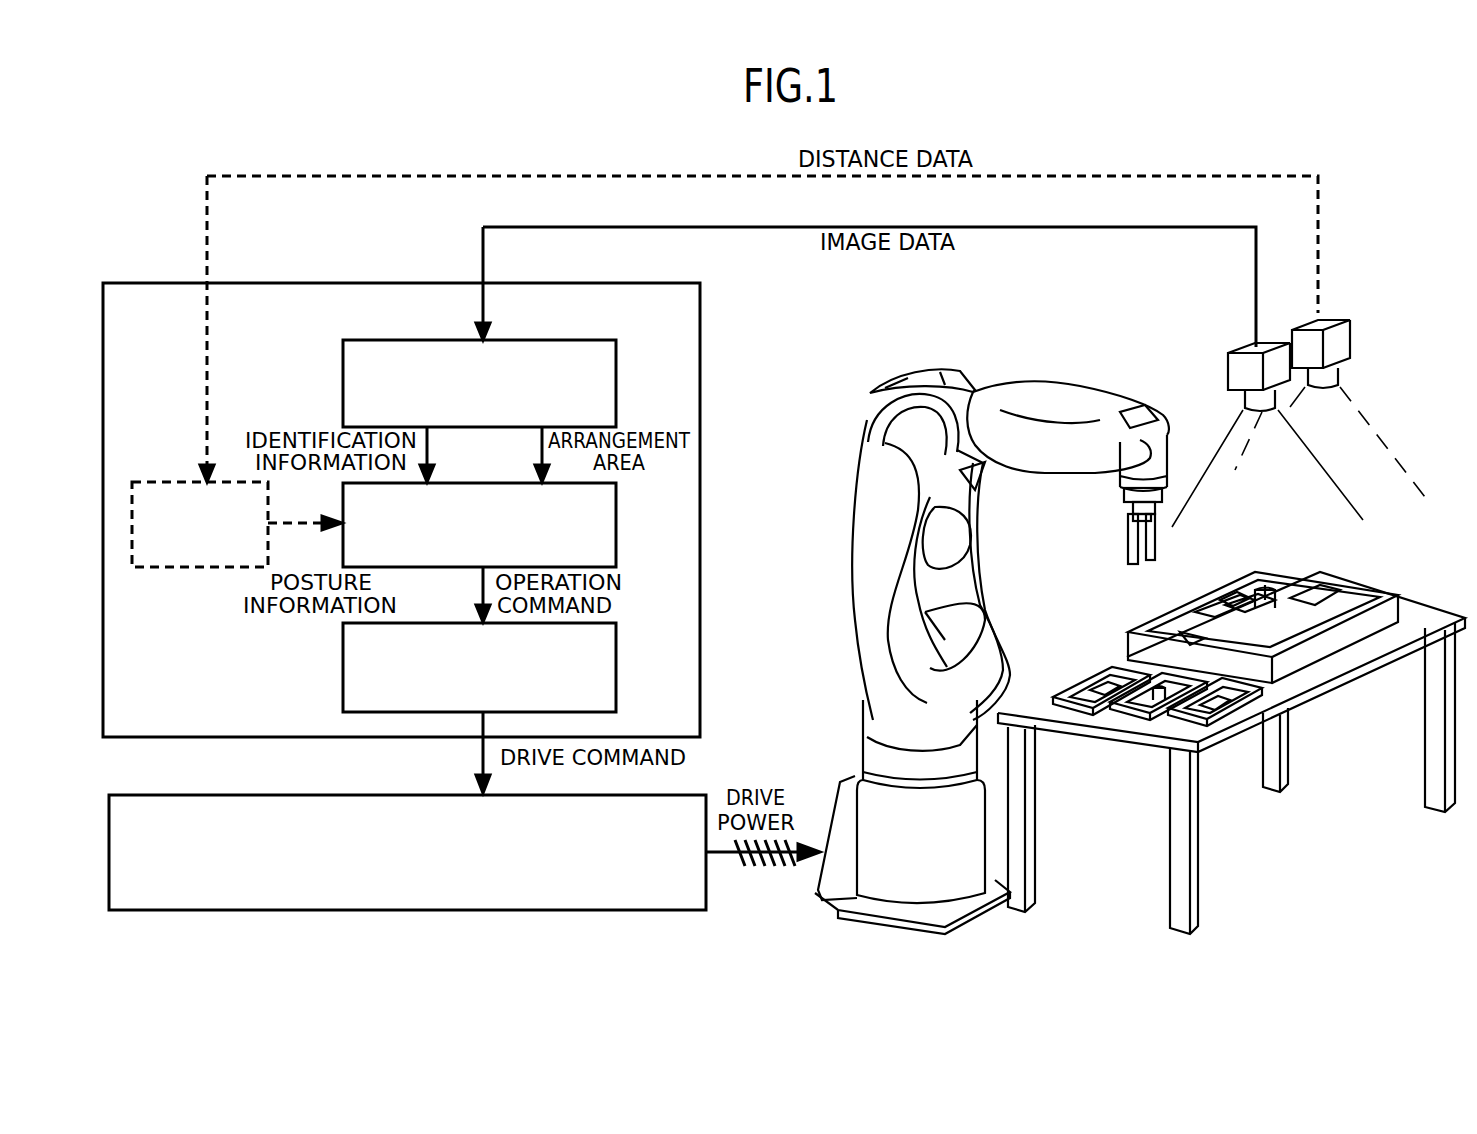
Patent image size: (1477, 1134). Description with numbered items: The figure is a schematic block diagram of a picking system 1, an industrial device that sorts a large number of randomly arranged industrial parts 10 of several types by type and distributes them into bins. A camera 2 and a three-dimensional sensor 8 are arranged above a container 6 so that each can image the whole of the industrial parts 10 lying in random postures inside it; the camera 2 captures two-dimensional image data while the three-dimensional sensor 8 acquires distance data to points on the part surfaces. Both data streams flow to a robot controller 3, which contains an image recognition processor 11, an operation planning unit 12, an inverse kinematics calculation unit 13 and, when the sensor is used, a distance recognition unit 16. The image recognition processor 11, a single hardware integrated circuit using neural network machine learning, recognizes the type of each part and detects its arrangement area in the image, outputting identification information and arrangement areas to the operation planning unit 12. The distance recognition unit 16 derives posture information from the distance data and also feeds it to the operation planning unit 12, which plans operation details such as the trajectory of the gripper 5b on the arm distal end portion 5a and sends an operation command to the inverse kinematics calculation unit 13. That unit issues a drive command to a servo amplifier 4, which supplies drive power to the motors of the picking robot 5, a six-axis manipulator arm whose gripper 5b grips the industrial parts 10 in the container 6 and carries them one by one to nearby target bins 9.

The picking system 1 is at (1412, 248).
The camera 2 is at (1238, 373).
The robot controller 3 is at (160, 283).
The servo amplifier 4 is at (410, 910).
The picking robot 5 is at (880, 394).
The arm distal end portion 5a is at (1125, 497).
The gripper 5b is at (1130, 555).
The container 6 is at (1402, 597).
The three-dimensional sensor 8 is at (1345, 340).
The target bins 9 is at (1080, 700).
The industrial parts 10 is at (1268, 605).
The image recognition processor 11 is at (616, 383).
The operation planning unit 12 is at (616, 515).
The inverse kinematics calculation unit 13 is at (616, 657).
The distance recognition unit 16 is at (168, 478).